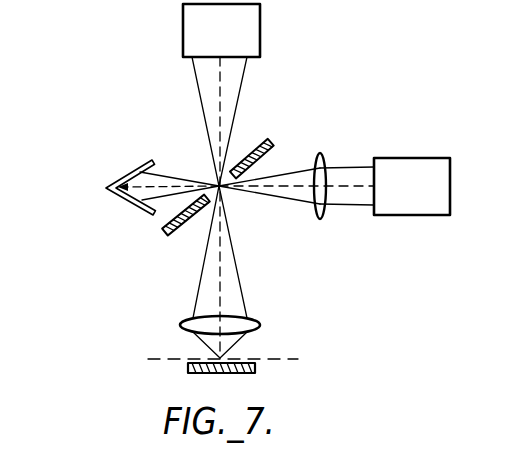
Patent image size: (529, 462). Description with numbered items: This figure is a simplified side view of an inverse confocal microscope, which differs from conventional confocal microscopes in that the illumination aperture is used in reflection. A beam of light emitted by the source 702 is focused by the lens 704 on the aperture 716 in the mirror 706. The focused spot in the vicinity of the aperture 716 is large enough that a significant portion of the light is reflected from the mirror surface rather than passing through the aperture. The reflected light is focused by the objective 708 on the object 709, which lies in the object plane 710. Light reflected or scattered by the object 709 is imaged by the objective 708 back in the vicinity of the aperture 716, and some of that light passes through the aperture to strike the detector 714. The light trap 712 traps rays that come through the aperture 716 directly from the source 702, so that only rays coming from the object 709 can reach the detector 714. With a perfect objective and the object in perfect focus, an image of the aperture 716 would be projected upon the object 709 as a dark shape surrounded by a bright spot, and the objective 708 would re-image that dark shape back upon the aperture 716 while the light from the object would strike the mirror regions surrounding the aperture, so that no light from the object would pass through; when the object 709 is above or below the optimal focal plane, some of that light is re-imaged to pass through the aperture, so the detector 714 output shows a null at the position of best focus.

The source 702 is at (417, 158).
The lens 704 is at (321, 156).
The mirror 706 is at (271, 141).
The objective 708 is at (196, 322).
The object 709 is at (188, 367).
The object plane 710 is at (290, 357).
The light trap 712 is at (128, 172).
The detector 714 is at (183, 33).
The aperture 716 is at (226, 194).